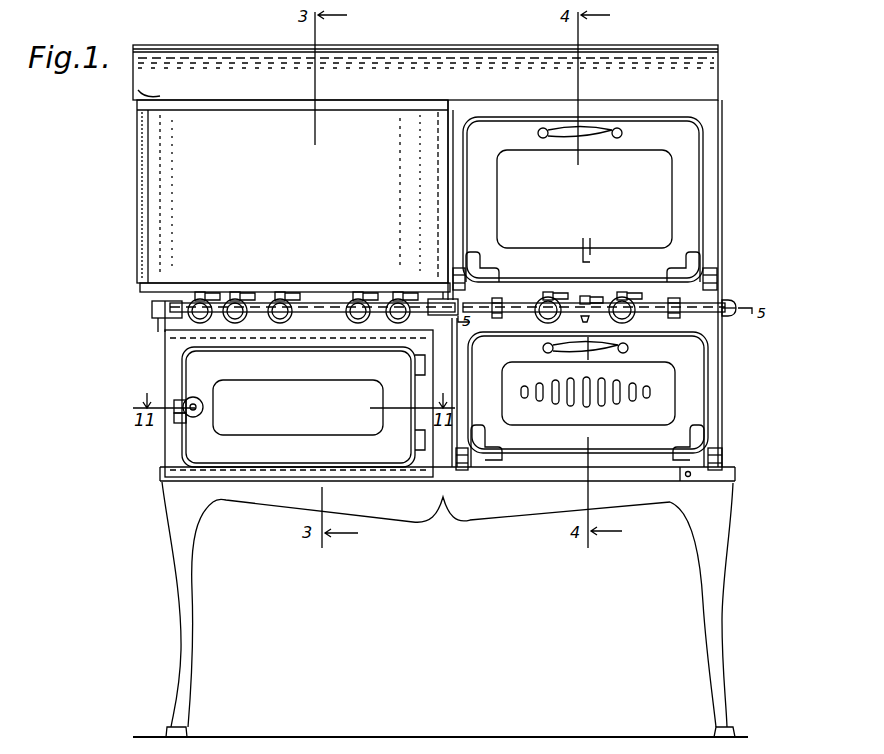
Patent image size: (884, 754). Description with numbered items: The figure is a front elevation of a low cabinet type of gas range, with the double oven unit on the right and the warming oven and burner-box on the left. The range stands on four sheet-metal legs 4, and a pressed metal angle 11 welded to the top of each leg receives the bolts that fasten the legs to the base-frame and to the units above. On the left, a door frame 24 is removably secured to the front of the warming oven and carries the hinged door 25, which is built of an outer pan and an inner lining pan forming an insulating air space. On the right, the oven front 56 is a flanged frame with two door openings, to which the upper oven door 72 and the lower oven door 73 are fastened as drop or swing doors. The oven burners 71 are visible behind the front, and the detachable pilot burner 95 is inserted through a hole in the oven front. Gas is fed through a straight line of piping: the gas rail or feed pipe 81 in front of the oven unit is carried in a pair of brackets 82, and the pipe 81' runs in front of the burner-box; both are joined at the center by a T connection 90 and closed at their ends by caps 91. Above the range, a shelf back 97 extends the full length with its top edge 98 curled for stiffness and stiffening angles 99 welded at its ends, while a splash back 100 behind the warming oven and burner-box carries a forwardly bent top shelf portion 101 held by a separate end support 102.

The legs 4 is at (186, 612).
The pressed metal angle 11 is at (175, 483).
The door frame 24 is at (170, 451).
The door 25 is at (258, 448).
The oven front 56 is at (720, 395).
The oven burners 71 is at (545, 297).
The upper oven door 72 is at (585, 203).
The lower oven door 73 is at (589, 401).
The gas rail or feed pipe 81 is at (611, 332).
The gas feed pipe 81' is at (312, 276).
The brackets or supports 82 is at (586, 301).
The T connection 90 is at (449, 318).
The caps 91 is at (732, 304).
The pilot burner 95 is at (587, 296).
The shelf back 97 is at (436, 62).
The top edge 98 is at (388, 52).
The stiffening angles 99 is at (160, 96).
The splash back 100 is at (176, 260).
The top shelf portion 101 is at (263, 107).
The end support 102 is at (142, 205).